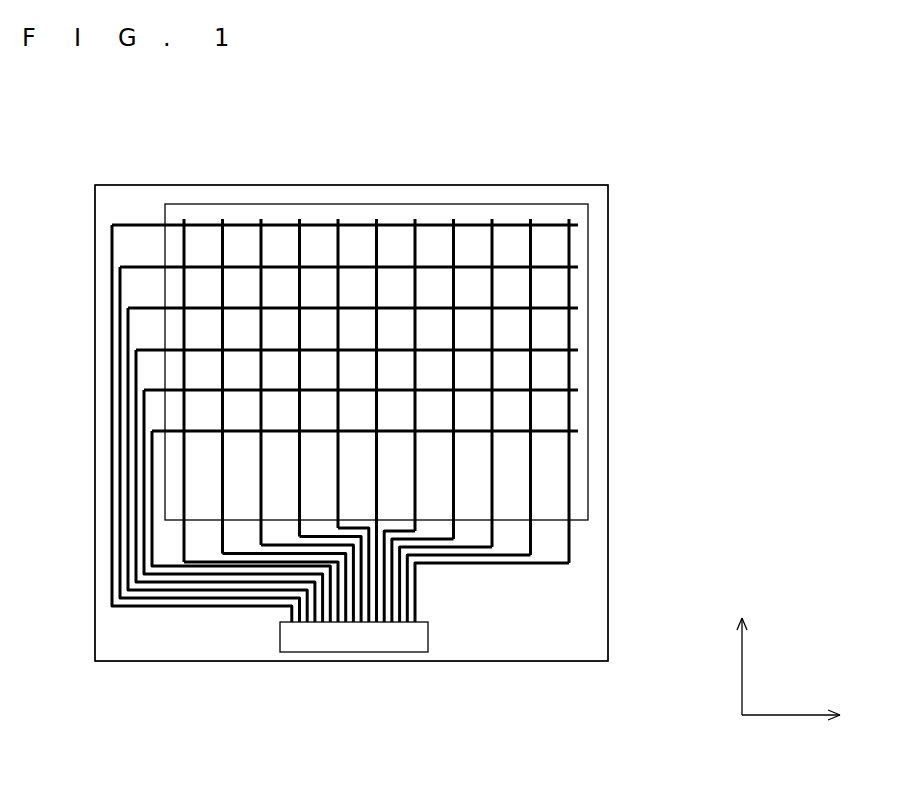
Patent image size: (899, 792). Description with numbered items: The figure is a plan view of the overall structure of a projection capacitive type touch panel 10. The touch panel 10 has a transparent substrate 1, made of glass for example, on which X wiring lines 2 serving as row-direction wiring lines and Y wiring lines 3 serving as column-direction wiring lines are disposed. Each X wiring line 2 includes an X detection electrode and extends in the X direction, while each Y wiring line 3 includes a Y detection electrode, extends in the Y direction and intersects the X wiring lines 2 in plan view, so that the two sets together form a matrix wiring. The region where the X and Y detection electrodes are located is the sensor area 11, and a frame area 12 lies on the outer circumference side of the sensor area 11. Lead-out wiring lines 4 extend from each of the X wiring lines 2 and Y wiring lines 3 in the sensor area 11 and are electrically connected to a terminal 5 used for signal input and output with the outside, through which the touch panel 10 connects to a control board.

The transparent substrate 1 is at (609, 293).
The X wiring lines 2 is at (278, 265).
The Y wiring lines 3 is at (380, 285).
The lead-out wiring lines 4 is at (112, 455).
The terminal 5 is at (353, 642).
The touch panel 10 is at (601, 163).
The sensor area 11 is at (577, 487).
The frame area 12 is at (593, 607).